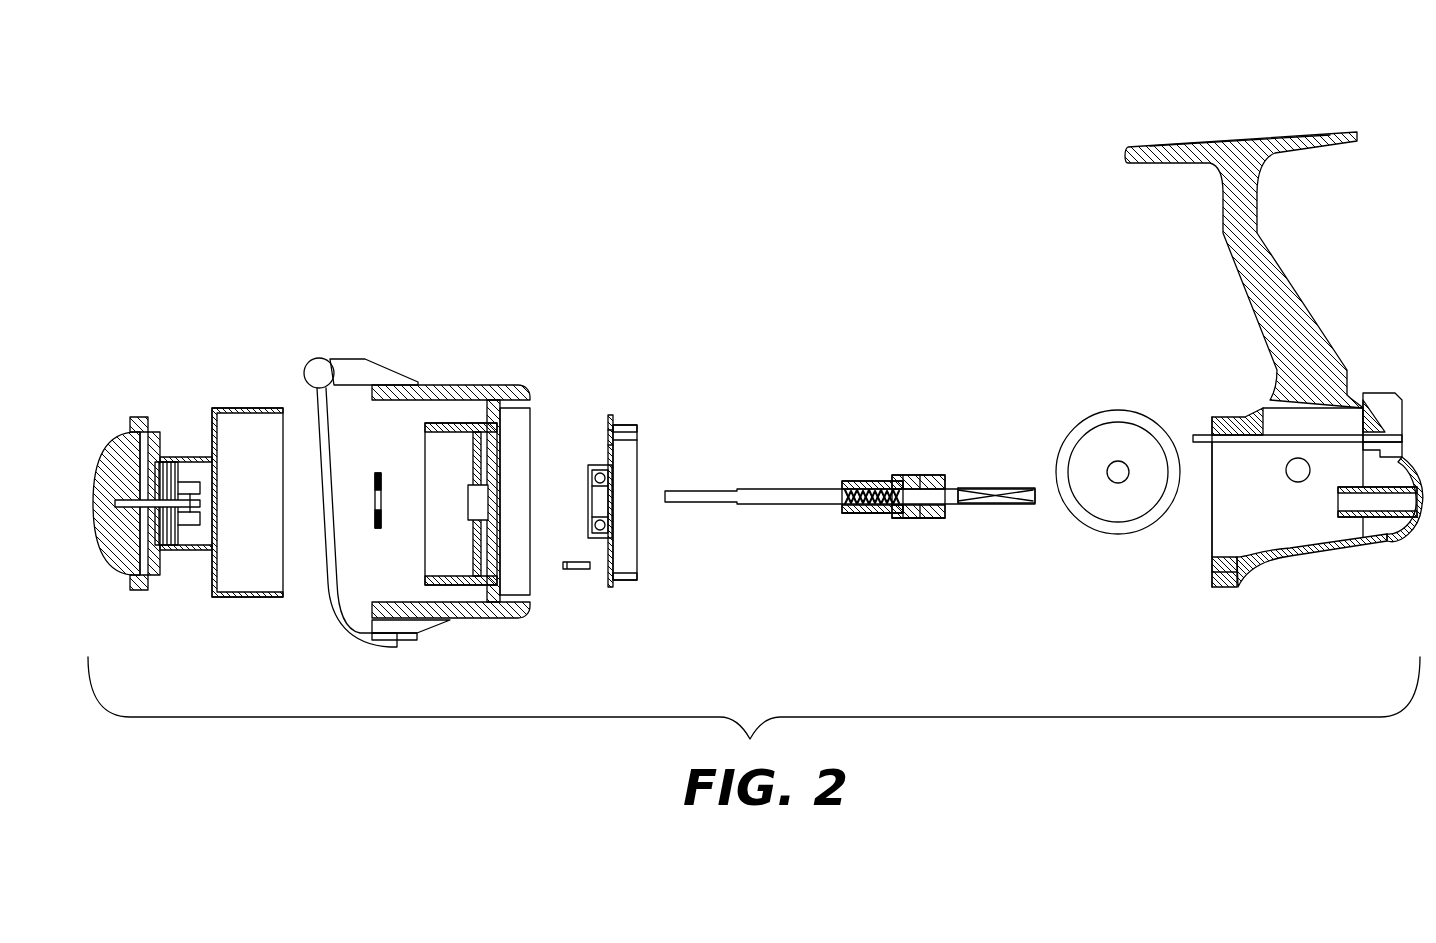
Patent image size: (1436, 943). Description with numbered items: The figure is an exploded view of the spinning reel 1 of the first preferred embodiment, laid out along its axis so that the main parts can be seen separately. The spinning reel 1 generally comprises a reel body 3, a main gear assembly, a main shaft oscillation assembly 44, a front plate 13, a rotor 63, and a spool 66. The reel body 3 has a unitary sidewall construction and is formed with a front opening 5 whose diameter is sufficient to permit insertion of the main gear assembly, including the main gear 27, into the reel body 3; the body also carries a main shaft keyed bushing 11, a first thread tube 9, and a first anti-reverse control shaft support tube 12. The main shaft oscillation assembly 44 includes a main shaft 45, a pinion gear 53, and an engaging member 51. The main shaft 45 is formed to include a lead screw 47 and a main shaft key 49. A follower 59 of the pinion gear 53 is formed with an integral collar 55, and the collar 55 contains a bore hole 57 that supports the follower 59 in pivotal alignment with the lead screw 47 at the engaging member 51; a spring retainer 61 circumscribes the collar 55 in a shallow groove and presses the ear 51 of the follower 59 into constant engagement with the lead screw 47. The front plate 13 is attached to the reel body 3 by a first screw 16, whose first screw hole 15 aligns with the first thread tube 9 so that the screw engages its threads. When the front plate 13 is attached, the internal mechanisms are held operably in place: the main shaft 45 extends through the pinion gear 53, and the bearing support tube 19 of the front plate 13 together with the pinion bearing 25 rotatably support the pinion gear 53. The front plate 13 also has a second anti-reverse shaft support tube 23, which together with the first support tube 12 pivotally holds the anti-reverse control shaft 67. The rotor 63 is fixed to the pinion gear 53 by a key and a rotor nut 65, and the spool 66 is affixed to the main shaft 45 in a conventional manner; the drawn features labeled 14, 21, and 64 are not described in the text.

The spinning reel 1 is at (382, 122).
The reel body 3 is at (1287, 565).
The opening 5 is at (1218, 510).
The first thread tube 9 is at (1212, 565).
The main shaft keyed bushing 11 is at (1383, 516).
The first anti-reverse control shaft support tube 12 is at (1376, 434).
The front plate 13 is at (628, 588).
The plate rim 14 is at (627, 421).
The first screw hole 15 is at (620, 563).
The first screw 16 is at (577, 572).
The bearing support tube 19 is at (589, 475).
The plate upper portion 21 is at (612, 425).
The second anti-reverse shaft support tube 23 is at (626, 443).
The pinion bearing 25 is at (590, 525).
The main gear 27 is at (1115, 411).
The main shaft oscillation assembly 44 is at (808, 410).
The main shaft 45 is at (752, 503).
The lead screw 47 is at (862, 480).
The main shaft key 49 is at (990, 488).
The engaging member 51 is at (908, 490).
The pinion gear 53 is at (935, 518).
The collar 55 is at (870, 513).
The bore hole 57 is at (935, 475).
The follower 59 is at (900, 478).
The spring retainer 61 is at (905, 518).
The rotor 63 is at (470, 360).
The spool hub 64 is at (470, 485).
The rotor nut 65 is at (370, 530).
The spool 66 is at (218, 388).
The anti-reverse control shaft 67 is at (1253, 437).